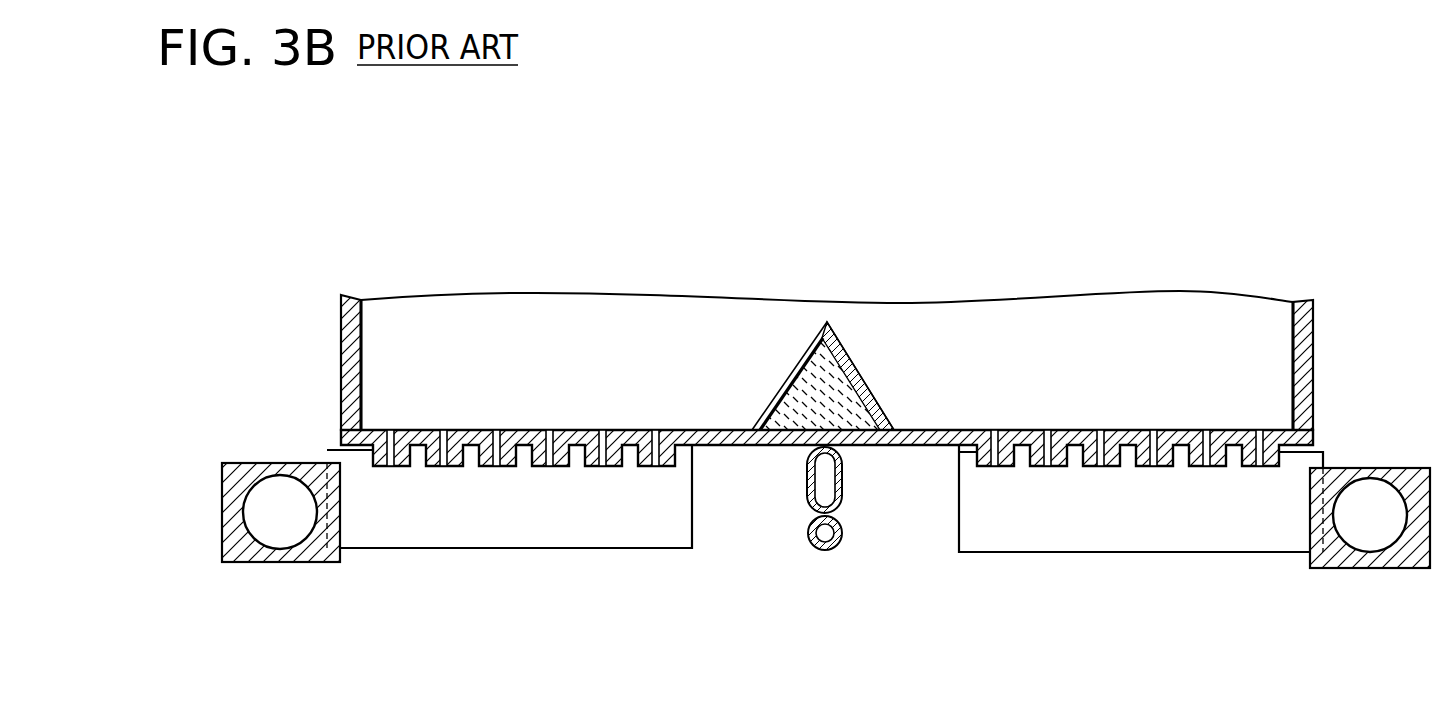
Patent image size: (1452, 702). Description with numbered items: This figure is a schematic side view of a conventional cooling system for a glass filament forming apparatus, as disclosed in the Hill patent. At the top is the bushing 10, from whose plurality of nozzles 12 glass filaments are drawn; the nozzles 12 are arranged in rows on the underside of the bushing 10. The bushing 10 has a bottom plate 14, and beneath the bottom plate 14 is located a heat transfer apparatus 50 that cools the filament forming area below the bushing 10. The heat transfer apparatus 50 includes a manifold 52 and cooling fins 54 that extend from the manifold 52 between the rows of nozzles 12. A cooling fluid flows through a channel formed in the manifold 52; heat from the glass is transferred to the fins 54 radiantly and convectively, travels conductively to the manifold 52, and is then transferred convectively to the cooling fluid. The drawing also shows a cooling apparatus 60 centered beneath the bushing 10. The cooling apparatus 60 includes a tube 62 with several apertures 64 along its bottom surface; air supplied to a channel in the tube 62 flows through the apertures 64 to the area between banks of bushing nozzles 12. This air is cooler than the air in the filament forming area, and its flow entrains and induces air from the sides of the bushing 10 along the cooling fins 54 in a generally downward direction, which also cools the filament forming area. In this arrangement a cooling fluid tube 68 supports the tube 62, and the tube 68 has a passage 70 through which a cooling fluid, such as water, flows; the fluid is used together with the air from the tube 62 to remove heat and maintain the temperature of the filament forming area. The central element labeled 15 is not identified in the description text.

The bushing 10 is at (819, 445).
The nozzles 12 is at (410, 462).
The bottom plate 14 is at (827, 460).
The triangular protrusion 15 is at (777, 447).
The heat transfer apparatus 50 is at (837, 487).
The manifold 52 is at (267, 560).
The cooling fins 54 is at (502, 548).
The cooling apparatus 60 is at (814, 541).
The tube 62 is at (867, 566).
The apertures 64 is at (823, 550).
The cooling fluid tube 68 is at (818, 491).
The passage 70 is at (825, 480).